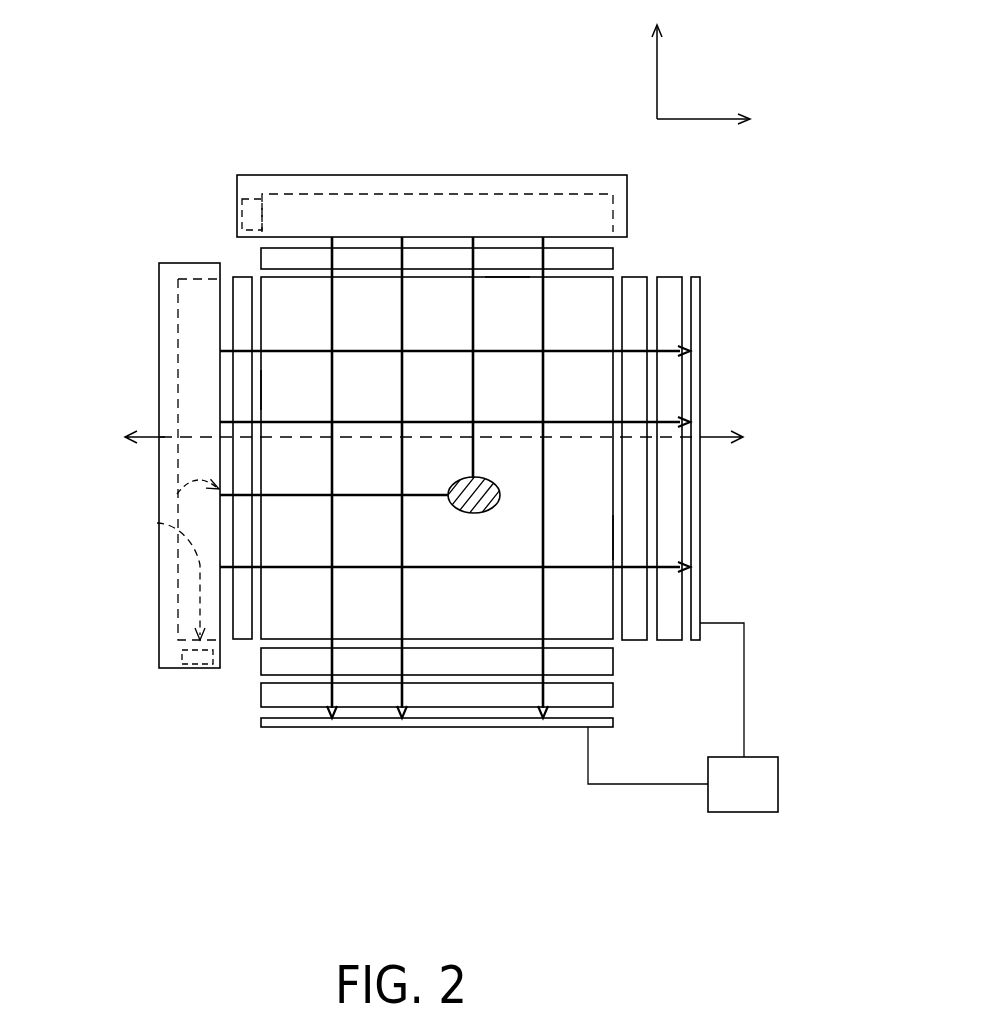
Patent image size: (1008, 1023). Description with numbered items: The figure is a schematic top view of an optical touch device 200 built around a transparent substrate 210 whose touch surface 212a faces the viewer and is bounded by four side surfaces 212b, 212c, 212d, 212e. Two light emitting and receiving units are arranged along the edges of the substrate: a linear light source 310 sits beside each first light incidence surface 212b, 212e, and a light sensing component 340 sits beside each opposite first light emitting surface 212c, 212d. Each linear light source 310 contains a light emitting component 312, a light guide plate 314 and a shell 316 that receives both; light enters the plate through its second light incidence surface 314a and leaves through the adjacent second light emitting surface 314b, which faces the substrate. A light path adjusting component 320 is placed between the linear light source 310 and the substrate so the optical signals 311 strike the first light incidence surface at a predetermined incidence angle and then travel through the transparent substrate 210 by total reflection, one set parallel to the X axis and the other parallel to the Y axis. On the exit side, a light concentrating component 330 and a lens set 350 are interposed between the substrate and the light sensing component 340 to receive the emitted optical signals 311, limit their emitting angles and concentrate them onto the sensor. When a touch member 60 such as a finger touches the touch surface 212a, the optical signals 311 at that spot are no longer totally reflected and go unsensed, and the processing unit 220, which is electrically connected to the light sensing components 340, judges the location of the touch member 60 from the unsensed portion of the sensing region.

The optical touch device 200 is at (405, 475).
The transparent substrate 210 is at (604, 285).
The touch surface 212a is at (600, 318).
The side surface (first light incidence surface) 212b is at (256, 389).
The side surface (first light emitting surface) 212c is at (372, 646).
The side surface (first light emitting surface) 212d is at (616, 533).
The side surface (first light incidence surface) 212e is at (505, 272).
The touch member 60 is at (483, 482).
The optical signals 311 is at (240, 351).
The linear light source 310 is at (126, 468).
The light emitting component 312 is at (182, 657).
The light guide plate 314 is at (178, 625).
The second light incidence surface 314a is at (157, 523).
The second light emitting surface 314b is at (148, 493).
The shell 316 is at (160, 583).
The light path adjusting component 320 is at (241, 640).
The light concentrating component 330 is at (262, 662).
The light sensing component 340 is at (532, 728).
The lens set 350 is at (613, 693).
The processing unit 220 is at (733, 806).